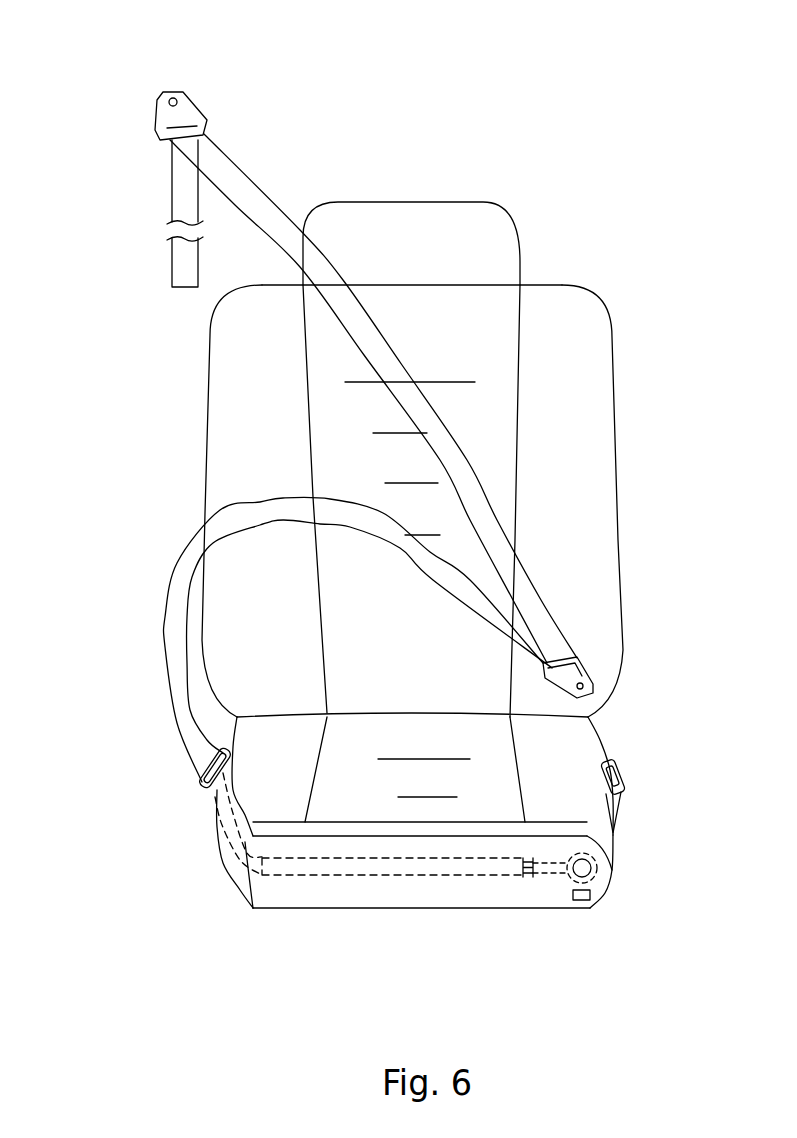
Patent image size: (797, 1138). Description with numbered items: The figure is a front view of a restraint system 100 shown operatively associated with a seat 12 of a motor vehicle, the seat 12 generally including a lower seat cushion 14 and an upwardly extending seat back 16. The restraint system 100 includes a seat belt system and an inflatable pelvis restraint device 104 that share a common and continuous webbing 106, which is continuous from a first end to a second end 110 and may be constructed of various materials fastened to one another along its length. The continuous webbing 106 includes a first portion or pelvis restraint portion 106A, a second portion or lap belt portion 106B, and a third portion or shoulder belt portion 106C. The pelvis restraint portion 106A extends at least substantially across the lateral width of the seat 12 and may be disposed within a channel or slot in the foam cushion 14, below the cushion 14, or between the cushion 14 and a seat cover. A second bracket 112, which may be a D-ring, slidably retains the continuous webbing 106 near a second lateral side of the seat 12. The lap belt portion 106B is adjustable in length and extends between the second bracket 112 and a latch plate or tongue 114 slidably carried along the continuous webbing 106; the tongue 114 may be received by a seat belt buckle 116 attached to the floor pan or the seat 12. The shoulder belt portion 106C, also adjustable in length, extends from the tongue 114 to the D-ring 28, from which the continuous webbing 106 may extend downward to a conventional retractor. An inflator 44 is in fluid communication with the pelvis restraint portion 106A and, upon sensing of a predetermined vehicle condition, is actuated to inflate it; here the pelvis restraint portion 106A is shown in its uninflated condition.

The restraint system 100 is at (435, 123).
The seat 12 is at (626, 279).
The seat cushion 14 is at (603, 737).
The seat back 16 is at (618, 498).
The D-ring 28 is at (176, 98).
The inflator 44 is at (593, 880).
The inflatable pelvis restraint device 104 is at (517, 910).
The continuous webbing 106 is at (302, 558).
The pelvis restraint portion 106A is at (400, 880).
The lap belt portion 106B is at (175, 565).
The shoulder belt portion 106C is at (386, 334).
The second end 110 is at (183, 258).
The second bracket 112 is at (217, 778).
The latch plate or tongue 114 is at (597, 681).
The seat belt buckle 116 is at (623, 785).